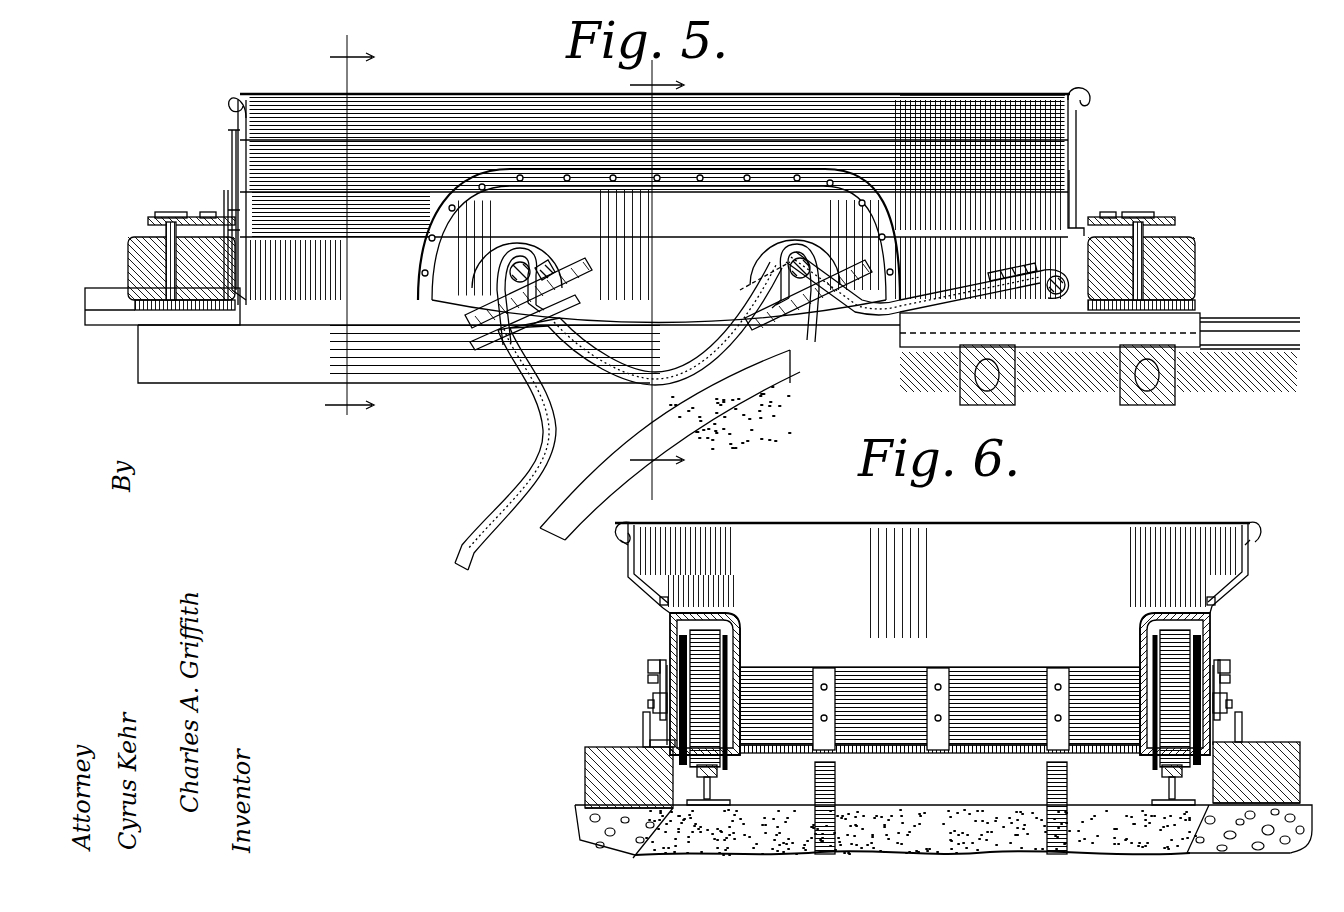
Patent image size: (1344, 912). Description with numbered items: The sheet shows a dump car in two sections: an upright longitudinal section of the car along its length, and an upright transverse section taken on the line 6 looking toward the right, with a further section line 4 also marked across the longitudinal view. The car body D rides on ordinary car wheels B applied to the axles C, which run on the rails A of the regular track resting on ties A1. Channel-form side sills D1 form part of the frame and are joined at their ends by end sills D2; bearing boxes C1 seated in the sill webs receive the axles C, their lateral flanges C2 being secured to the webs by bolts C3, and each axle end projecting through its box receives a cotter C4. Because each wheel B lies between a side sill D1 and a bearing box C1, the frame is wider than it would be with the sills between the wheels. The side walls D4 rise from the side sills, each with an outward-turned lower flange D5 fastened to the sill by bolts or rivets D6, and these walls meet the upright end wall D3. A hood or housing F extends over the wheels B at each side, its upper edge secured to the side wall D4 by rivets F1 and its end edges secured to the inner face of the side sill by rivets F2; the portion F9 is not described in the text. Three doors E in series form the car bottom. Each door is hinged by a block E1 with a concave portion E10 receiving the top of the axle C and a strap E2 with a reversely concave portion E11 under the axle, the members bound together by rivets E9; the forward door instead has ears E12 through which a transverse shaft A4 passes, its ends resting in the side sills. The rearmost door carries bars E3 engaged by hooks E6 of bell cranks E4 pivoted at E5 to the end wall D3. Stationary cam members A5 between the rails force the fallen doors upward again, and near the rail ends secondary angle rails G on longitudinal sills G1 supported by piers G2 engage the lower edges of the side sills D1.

In FIG. 5, the rails A is at (1257, 335).
In FIG. 6, the rails A is at (714, 788).
In FIG. 5, the ties A1 is at (1120, 408).
In FIG. 5, the shaft A4 is at (1071, 190).
In FIG. 5, the stationary members A5 is at (550, 540).
In FIG. 6, the stationary members A5 is at (836, 785).
In FIG. 5, the car wheels B is at (468, 306).
In FIG. 6, the car wheels B is at (710, 660).
In FIG. 5, the axles C is at (522, 260).
In FIG. 6, the axles C is at (652, 703).
In FIG. 6, the bearing boxes C1 is at (668, 726).
In FIG. 6, the lateral flanges C2 is at (652, 690).
In FIG. 6, the bolts C3 is at (663, 680).
In FIG. 6, the cotter C4 is at (652, 700).
In FIG. 5, the car body D is at (649, 183).
In FIG. 6, the car body D is at (938, 546).
In FIG. 5, the side sills D1 is at (300, 305).
In FIG. 6, the side sills D1 is at (725, 648).
In FIG. 5, the end sills D2 is at (137, 250).
In FIG. 5, the end wall D3 is at (1071, 118).
In FIG. 6, the end wall D3 is at (876, 559).
In FIG. 5, the side walls D4 is at (918, 107).
In FIG. 6, the side walls D4 is at (628, 562).
In FIG. 6, the lower flange D5 is at (702, 617).
In FIG. 6, the bolts or rivets D6 is at (654, 660).
In FIG. 5, the doors E is at (617, 360).
In FIG. 6, the doors E is at (948, 755).
In FIG. 5, the hinge block E1 is at (492, 322).
In FIG. 5, the strap E2 is at (522, 332).
In FIG. 5, the bars or arms E3 is at (460, 556).
In FIG. 5, the bell cranks E4 is at (244, 193).
In FIG. 5, the pivot E5 is at (226, 200).
In FIG. 5, the hook E6 is at (234, 303).
In FIG. 5, the rivets E9 is at (556, 272).
In FIG. 5, the concave portion E10 is at (500, 280).
In FIG. 5, the reversely concave portion E11 is at (538, 266).
In FIG. 5, the ears or hinge members E12 is at (1060, 282).
In FIG. 5, the hood or housing F is at (659, 246).
In FIG. 6, the hood or housing F is at (1148, 625).
In FIG. 5, the bolts or rivets F1 is at (748, 176).
In FIG. 6, the bolts or rivets F1 is at (670, 606).
In FIG. 5, the bolts or rivets F2 is at (422, 274).
In FIG. 5, the ring part F9 is at (760, 278).
In FIG. 5, the secondary rails G is at (105, 308).
In FIG. 6, the secondary rails G is at (627, 752).
In FIG. 5, the longitudinal sills G1 is at (148, 380).
In FIG. 6, the longitudinal sills G1 is at (598, 790).
In FIG. 6, the piers G2 is at (925, 835).
In FIG. 5, the section line 4 is at (349, 236).
In FIG. 5, the section line 6 is at (667, 284).